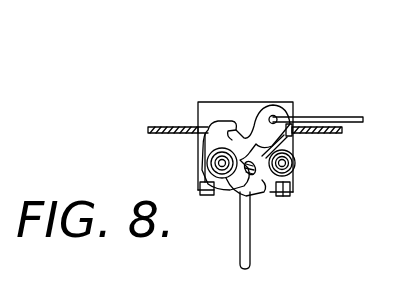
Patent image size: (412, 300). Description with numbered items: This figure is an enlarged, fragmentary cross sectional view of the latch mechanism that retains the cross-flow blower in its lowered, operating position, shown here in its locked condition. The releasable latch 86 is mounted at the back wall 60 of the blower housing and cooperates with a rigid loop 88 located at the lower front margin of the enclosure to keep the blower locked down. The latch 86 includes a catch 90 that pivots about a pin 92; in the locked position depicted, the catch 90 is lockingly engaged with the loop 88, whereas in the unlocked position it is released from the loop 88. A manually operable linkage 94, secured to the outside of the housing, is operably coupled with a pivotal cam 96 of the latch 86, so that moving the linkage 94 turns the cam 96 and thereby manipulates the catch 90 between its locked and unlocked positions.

The back wall 60 is at (155, 127).
The releasable latch 86 is at (311, 104).
The rigid loop 88 is at (250, 238).
The catch 90 is at (233, 184).
The pin 92 is at (212, 163).
The manually operable linkage 94 is at (338, 117).
The pivotal cam 96 is at (263, 127).